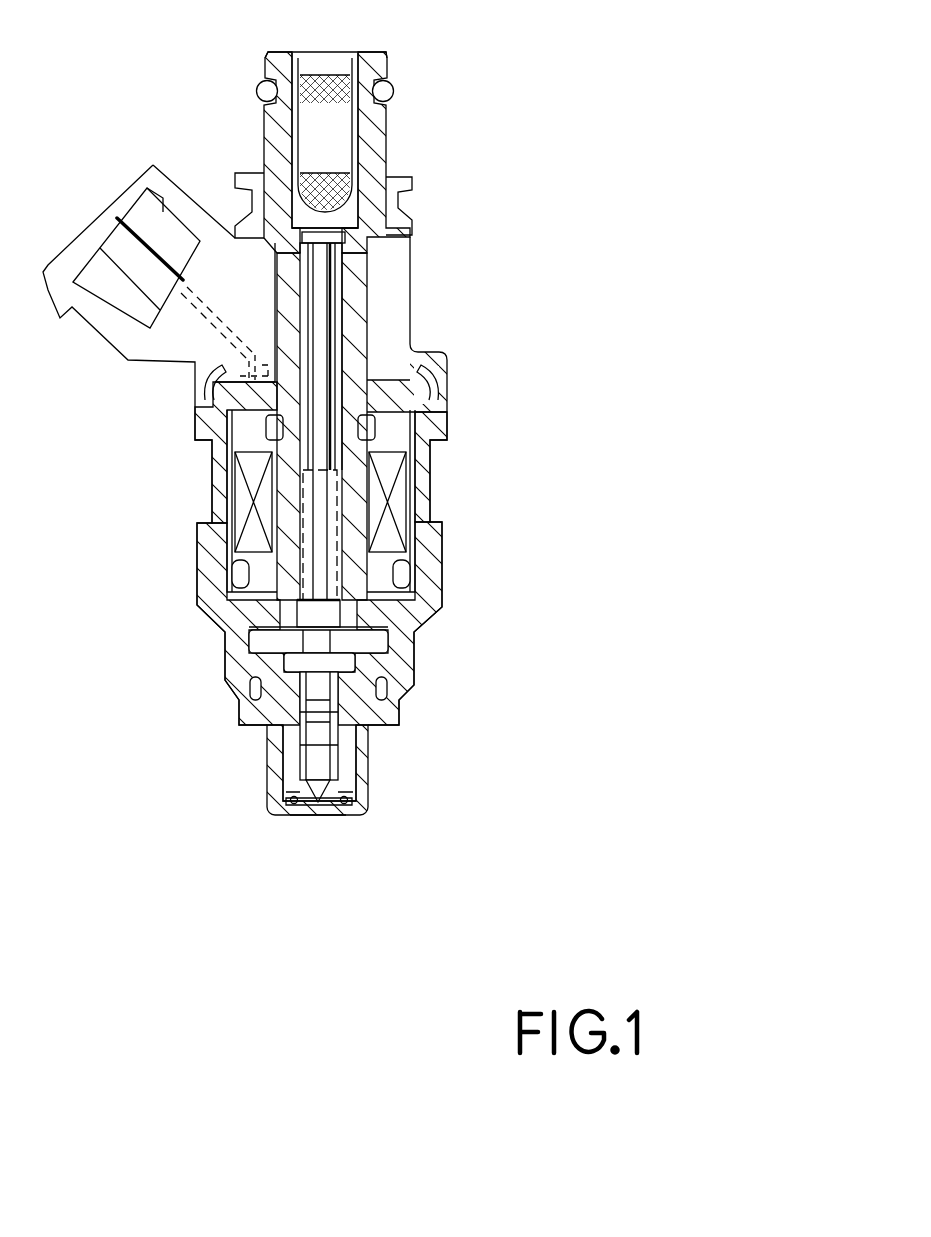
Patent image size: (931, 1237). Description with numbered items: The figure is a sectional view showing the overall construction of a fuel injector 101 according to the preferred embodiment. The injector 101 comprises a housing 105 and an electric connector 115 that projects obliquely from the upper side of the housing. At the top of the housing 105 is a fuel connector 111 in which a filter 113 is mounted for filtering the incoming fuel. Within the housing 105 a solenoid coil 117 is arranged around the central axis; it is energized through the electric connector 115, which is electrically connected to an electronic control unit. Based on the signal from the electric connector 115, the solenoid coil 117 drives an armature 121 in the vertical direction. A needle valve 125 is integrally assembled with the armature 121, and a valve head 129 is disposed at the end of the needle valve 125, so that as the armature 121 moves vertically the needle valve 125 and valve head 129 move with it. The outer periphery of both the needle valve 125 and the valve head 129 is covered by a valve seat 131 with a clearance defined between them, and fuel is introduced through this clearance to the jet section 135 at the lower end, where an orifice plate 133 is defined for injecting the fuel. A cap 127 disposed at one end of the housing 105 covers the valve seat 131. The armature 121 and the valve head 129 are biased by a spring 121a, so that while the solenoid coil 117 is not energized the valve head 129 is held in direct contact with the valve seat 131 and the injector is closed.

The injector 101 is at (530, 424).
The housing 105 is at (270, 147).
The fuel connector 111 is at (396, 62).
The filter 113 is at (335, 187).
The electric connector 115 is at (112, 193).
The solenoid coil 117 is at (240, 497).
The armature 121 is at (357, 593).
The spring 121a is at (340, 558).
The needle valve 125 is at (405, 665).
The cap 127 is at (282, 813).
The valve head 129 is at (347, 768).
The valve seat 131 is at (283, 774).
The orifice plate 133 is at (325, 806).
The jet section 135 is at (313, 826).